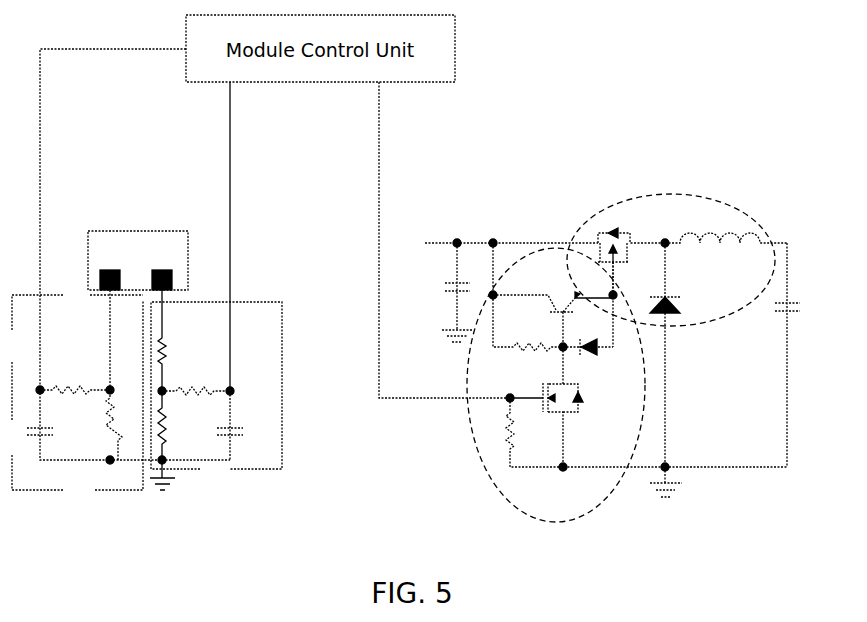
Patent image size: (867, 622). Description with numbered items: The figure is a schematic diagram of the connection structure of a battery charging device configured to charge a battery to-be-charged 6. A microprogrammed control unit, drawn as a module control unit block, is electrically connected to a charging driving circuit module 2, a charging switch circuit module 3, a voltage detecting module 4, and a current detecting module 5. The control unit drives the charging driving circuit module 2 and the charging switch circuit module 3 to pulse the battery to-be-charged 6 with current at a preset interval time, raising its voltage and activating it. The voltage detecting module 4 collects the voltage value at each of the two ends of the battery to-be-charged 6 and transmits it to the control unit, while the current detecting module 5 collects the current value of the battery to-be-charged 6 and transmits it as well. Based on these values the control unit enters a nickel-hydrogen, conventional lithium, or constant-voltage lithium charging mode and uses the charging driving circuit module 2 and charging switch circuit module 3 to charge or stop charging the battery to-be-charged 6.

The charging driving circuit module 2 is at (487, 468).
The charging switch circuit module 3 is at (680, 192).
The voltage detecting module 4 is at (262, 303).
The current detecting module 5 is at (40, 490).
The battery to-be-charged 6 is at (107, 238).